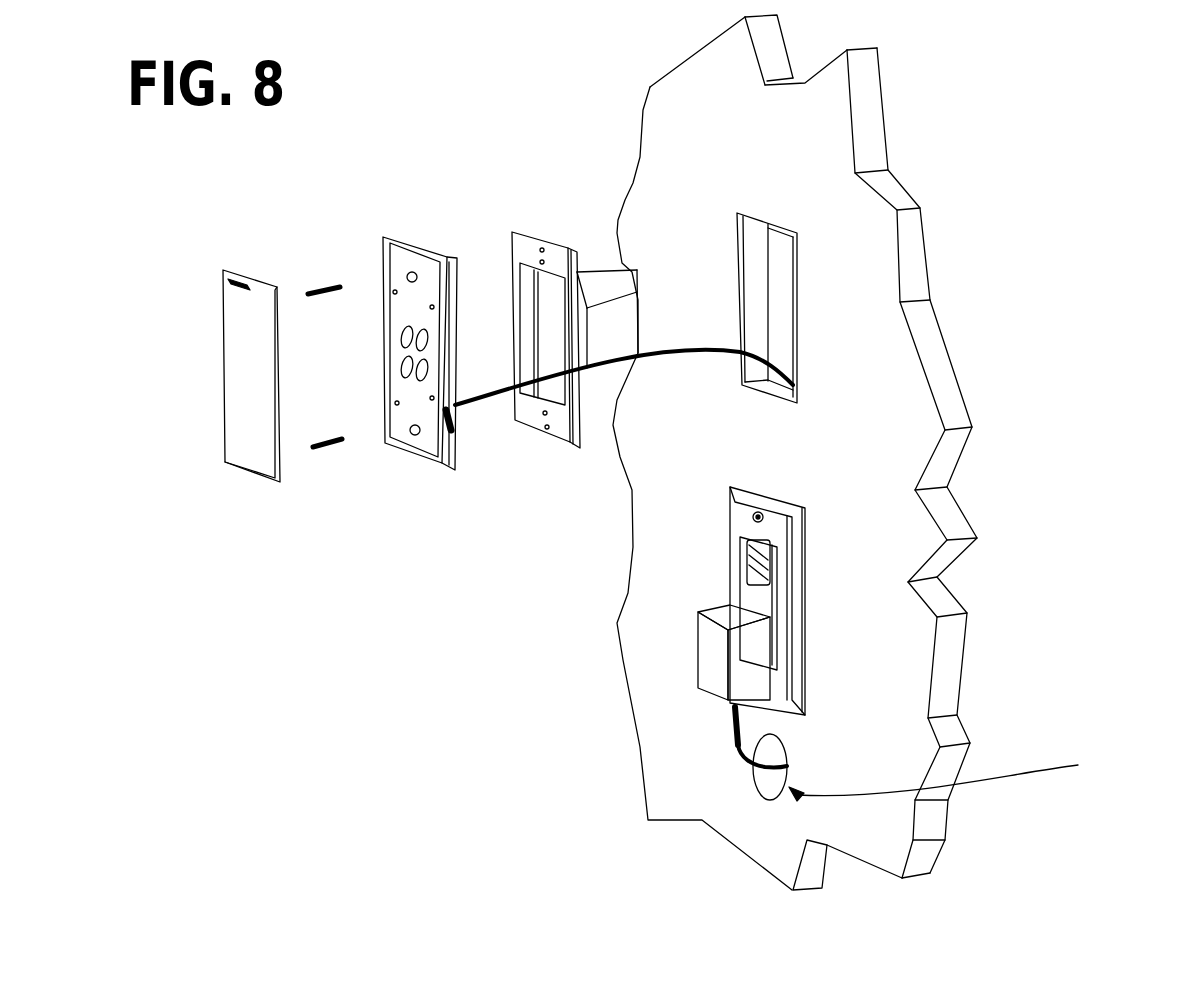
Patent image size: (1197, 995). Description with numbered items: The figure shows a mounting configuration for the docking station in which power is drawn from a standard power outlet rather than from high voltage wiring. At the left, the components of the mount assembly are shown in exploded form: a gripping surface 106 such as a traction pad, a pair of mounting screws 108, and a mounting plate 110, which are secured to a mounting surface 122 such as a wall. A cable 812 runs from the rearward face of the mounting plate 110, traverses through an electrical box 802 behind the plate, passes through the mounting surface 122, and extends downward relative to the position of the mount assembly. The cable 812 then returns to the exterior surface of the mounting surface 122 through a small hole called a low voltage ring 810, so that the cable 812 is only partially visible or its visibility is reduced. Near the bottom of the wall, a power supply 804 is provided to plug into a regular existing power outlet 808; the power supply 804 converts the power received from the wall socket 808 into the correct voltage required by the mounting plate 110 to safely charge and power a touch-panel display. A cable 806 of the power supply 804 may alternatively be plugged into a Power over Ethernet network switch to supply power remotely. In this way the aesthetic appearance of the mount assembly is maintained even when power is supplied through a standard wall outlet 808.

The gripping surface 106 is at (228, 307).
The mounting screws 108 is at (327, 447).
The mounting plate 110 is at (395, 277).
The mounting surface 122 is at (918, 425).
The electrical box 802 is at (535, 425).
The power supply 804 is at (705, 650).
The cable 806 is at (733, 745).
The power outlet 808 is at (755, 588).
The low voltage ring 810 is at (953, 777).
The cable 812 is at (725, 347).